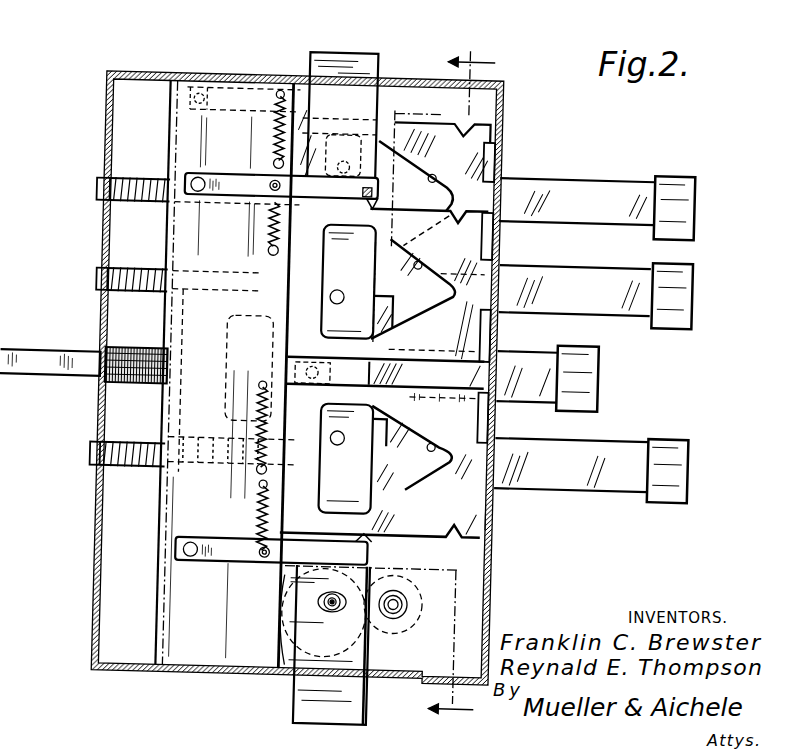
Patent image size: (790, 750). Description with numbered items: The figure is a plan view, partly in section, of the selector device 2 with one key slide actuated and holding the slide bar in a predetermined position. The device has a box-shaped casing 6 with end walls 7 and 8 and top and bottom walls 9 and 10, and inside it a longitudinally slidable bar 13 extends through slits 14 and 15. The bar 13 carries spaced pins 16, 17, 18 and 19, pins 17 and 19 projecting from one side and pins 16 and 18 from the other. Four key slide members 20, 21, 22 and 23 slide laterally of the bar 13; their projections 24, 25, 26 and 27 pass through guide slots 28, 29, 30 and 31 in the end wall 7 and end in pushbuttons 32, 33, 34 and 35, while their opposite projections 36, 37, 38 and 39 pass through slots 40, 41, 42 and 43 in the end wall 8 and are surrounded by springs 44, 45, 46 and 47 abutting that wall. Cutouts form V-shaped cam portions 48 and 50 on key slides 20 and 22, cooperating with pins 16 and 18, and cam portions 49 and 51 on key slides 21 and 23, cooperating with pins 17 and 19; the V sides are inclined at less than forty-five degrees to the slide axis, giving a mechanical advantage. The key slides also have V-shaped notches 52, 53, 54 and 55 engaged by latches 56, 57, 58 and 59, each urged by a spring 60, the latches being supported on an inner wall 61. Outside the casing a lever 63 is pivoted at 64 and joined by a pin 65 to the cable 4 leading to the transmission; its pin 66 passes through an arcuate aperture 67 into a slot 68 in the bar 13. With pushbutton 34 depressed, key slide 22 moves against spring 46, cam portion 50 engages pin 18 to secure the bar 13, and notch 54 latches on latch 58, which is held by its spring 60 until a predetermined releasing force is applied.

The selector device 2 is at (68, 645).
The cable 4 is at (388, 382).
The casing 6 is at (98, 547).
The end wall 7 is at (496, 562).
The end wall 8 is at (100, 512).
The top wall 9 is at (407, 77).
The bottom wall 10 is at (243, 676).
The slidable bar 13 is at (312, 54).
The slit 14 is at (364, 118).
The slit 15 is at (375, 697).
The pin 16 is at (343, 156).
The pin 17 is at (339, 293).
The pin 18 is at (385, 380).
The pin 19 is at (342, 434).
The key slide member 20 is at (494, 140).
The key slide member 21 is at (491, 243).
The key slide member 22 is at (394, 424).
The key slide member 23 is at (496, 512).
The projection 24 is at (600, 172).
The projection 25 is at (599, 268).
The projection 26 is at (545, 350).
The projection 27 is at (583, 484).
The guide slot 28 is at (498, 162).
The guide slot 29 is at (498, 258).
The guide slot 30 is at (496, 340).
The guide slot 31 is at (497, 435).
The pushbutton 32 is at (690, 178).
The pushbutton 33 is at (690, 284).
The pushbutton 34 is at (598, 367).
The pushbutton 35 is at (690, 451).
The projection 36 is at (92, 205).
The projection 37 is at (94, 291).
The projection 38 is at (25, 357).
The projection 39 is at (90, 465).
The slot 40 is at (96, 180).
The slot 41 is at (94, 270).
The slot 42 is at (99, 347).
The slot 43 is at (96, 440).
The spring 44 is at (137, 185).
The spring 45 is at (128, 275).
The spring 46 is at (132, 352).
The spring 47 is at (128, 448).
The V-shaped cam portion 48 is at (428, 172).
The V-shaped cam portion 49 is at (418, 262).
The V-shaped cam portion 50 is at (348, 282).
The V-shaped cam portion 51 is at (436, 441).
The V-shaped notch 52 is at (458, 120).
The V-shaped notch 53 is at (430, 187).
The V-shaped notch 54 is at (378, 458).
The V-shaped notch 55 is at (457, 536).
The latch 56 is at (371, 98).
The latch 57 is at (373, 189).
The latch 58 is at (345, 459).
The latch 59 is at (375, 548).
The spring 60 is at (268, 130).
The inner wall 61 is at (168, 620).
The lever 63 is at (352, 640).
The pivot 64 is at (401, 612).
The pin 65 is at (285, 606).
The pin 66 is at (336, 596).
The arcuate aperture 67 is at (285, 632).
The slot 68 is at (340, 609).